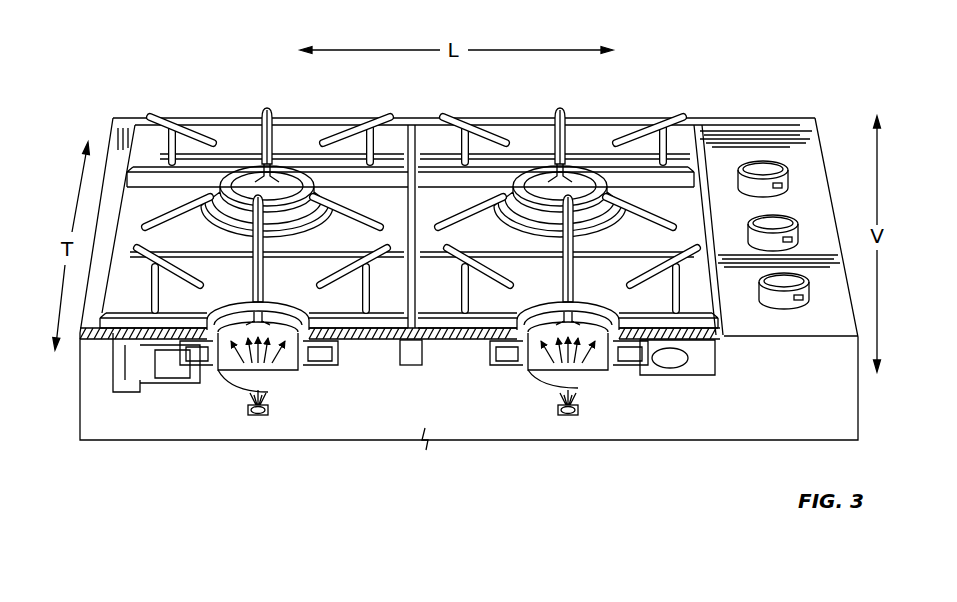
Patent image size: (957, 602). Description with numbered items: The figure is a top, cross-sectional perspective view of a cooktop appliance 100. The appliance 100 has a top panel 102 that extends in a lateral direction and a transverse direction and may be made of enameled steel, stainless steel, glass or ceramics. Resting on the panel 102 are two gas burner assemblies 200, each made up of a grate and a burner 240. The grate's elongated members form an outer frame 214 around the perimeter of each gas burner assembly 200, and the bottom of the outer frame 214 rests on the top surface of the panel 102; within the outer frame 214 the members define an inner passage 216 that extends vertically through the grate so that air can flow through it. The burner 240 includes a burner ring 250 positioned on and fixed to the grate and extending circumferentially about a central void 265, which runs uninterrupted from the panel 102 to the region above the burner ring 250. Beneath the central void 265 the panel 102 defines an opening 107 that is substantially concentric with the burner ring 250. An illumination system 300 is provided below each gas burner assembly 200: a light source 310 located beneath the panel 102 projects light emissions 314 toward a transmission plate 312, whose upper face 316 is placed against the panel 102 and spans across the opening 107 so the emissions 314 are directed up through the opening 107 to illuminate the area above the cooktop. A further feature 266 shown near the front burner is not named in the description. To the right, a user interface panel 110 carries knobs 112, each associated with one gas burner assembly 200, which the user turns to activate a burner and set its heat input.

The cooktop appliance 100 is at (221, 45).
The panel 102 is at (673, 380).
The opening 107 is at (214, 376).
The user interface panel 110 is at (768, 208).
The knobs 112 is at (803, 296).
The gas burner assembly 200 is at (425, 189).
The outer frame 214 is at (138, 157).
The inner passage 216 is at (660, 302).
The burner 240 is at (546, 306).
The burner ring 250 is at (327, 380).
The central void 265 is at (563, 187).
The burner cap 266 is at (212, 330).
The illumination system 300 is at (603, 385).
The light source 310 is at (250, 418).
The transmission plate 312 is at (620, 387).
The light emissions 314 is at (280, 387).
The upper face 316 is at (268, 345).